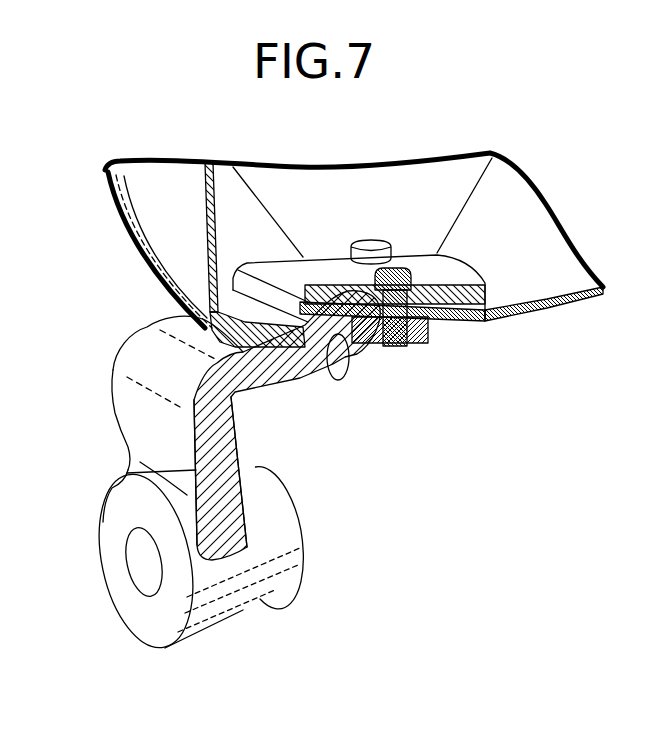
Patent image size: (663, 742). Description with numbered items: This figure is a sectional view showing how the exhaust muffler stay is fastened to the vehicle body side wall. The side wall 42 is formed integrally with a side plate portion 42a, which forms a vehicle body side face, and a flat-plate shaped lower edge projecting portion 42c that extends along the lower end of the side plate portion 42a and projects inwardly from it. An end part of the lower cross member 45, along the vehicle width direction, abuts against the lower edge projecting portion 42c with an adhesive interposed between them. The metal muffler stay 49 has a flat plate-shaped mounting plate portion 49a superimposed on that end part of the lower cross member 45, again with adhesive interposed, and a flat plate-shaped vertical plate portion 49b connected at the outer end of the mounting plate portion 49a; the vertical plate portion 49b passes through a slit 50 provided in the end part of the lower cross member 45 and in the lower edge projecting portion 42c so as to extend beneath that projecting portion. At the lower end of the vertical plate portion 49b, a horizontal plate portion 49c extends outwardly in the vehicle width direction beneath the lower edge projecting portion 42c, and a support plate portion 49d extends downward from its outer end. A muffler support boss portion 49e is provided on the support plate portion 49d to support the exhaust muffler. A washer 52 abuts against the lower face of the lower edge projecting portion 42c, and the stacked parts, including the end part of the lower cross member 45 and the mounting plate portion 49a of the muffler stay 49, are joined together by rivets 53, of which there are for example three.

The side wall 42 is at (116, 206).
The side plate portion 42a is at (146, 262).
The lower edge projecting portion 42c is at (465, 330).
The lower cross member 45 is at (550, 303).
The muffler stay 49 is at (235, 486).
The mounting plate portion 49a is at (443, 265).
The vertical plate portion 49b is at (350, 348).
The horizontal plate portion 49c is at (268, 383).
The support plate portion 49d is at (137, 443).
The muffler support boss portion 49e is at (210, 624).
The slit 50 is at (330, 374).
The washer 52 is at (437, 343).
The rivet 53 is at (371, 236).